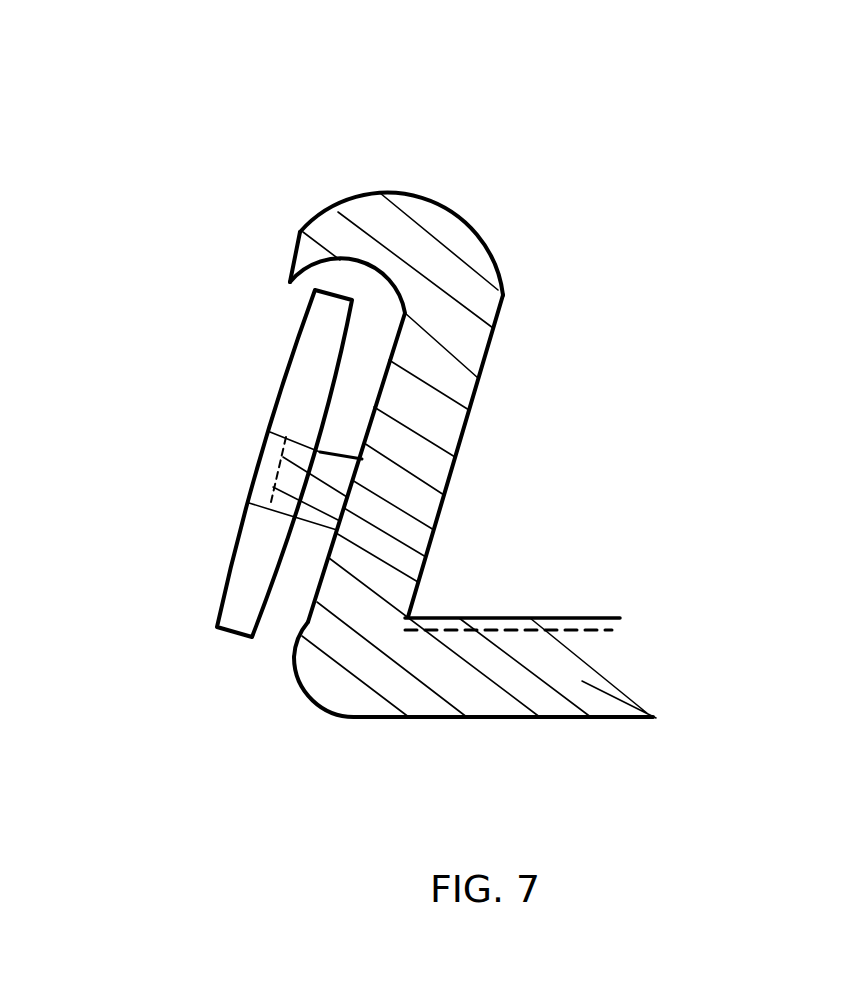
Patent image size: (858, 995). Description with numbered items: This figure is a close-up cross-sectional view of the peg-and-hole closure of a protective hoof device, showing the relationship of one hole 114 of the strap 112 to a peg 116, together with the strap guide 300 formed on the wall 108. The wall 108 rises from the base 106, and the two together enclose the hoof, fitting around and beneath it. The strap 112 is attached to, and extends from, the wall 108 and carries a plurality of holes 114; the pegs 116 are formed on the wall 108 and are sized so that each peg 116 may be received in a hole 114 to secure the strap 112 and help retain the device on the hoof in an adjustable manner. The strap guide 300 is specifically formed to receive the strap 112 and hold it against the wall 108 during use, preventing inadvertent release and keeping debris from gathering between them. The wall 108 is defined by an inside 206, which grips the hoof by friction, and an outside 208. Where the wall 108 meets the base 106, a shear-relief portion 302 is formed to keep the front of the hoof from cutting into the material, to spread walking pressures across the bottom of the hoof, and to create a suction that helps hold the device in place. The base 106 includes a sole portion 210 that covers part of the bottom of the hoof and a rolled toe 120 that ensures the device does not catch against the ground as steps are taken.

The wall 108 is at (479, 298).
The inside 206 is at (480, 377).
The strap guide 300 is at (310, 222).
The strap 112 is at (288, 412).
The holes 114 is at (257, 476).
The pegs 116 is at (338, 434).
The shear-relief portion 302 is at (447, 615).
The sole portion 210 is at (553, 631).
The outside 208 is at (304, 618).
The rolled toe 120 is at (313, 699).
The base 106 is at (653, 718).